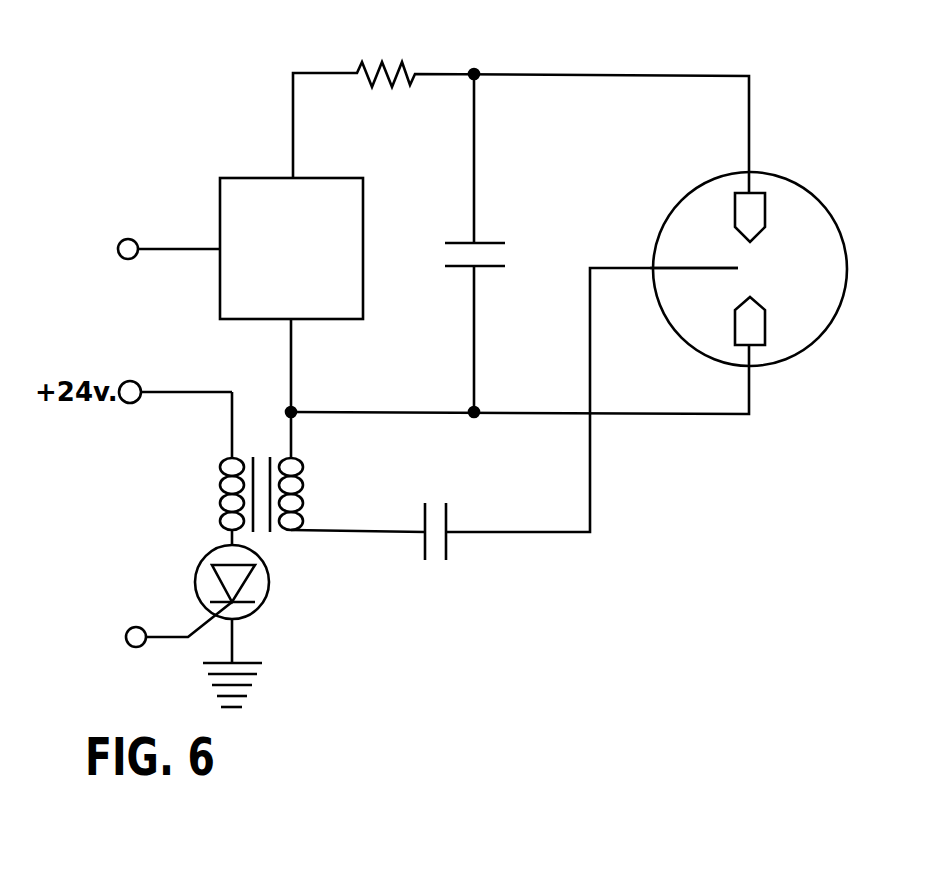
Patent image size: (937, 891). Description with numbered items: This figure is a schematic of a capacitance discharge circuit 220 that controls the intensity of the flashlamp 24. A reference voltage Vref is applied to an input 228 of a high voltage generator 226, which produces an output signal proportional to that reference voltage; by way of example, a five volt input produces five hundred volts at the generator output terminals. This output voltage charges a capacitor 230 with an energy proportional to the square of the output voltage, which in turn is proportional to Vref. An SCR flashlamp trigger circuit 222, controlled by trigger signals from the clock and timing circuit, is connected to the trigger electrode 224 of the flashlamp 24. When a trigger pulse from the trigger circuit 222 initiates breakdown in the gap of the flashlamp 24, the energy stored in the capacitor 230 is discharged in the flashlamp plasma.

The capacitance discharge circuit 220 is at (592, 66).
The input 228 is at (152, 246).
The high voltage generator 226 is at (363, 247).
The capacitor 230 is at (483, 245).
The trigger electrode 224 is at (700, 266).
The flashlamp 24 is at (847, 272).
The SCR flashlamp trigger circuit 222 is at (178, 569).